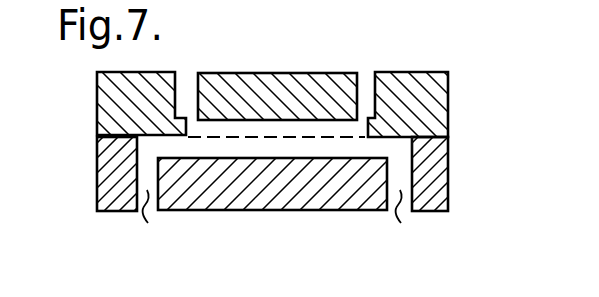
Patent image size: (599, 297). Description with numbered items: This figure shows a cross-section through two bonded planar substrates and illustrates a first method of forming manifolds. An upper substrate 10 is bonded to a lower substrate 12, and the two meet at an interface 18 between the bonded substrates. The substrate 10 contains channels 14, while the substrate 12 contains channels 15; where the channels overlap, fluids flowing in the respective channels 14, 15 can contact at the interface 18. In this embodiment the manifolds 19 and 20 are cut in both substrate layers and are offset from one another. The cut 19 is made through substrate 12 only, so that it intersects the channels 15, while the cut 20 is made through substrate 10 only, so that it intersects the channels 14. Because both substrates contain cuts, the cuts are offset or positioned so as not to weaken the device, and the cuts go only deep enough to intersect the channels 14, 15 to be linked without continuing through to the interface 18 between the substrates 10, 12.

The substrate 10 is at (112, 106).
The substrate 12 is at (112, 176).
The channels 14 is at (357, 128).
The channels 15 is at (393, 150).
The interface 18 is at (293, 138).
The manifold 19 is at (277, 224).
The manifold 20 is at (368, 70).